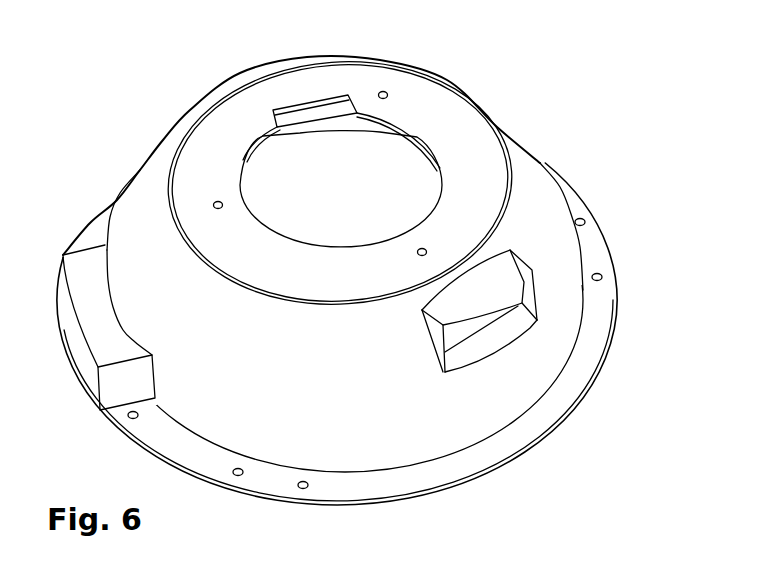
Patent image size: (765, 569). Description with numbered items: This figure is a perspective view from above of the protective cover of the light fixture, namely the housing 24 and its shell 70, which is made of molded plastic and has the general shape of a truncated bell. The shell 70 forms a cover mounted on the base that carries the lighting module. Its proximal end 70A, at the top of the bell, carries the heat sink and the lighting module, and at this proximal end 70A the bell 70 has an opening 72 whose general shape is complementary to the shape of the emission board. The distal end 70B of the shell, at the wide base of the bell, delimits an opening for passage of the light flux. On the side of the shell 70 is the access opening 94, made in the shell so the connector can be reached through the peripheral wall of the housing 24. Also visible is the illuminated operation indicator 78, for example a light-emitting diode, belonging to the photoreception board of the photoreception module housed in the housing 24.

The housing 24 is at (556, 114).
The shell 70 is at (531, 177).
The proximal end 70A is at (414, 102).
The distal end 70B is at (585, 358).
The opening 72 is at (310, 104).
The illuminated operation indicator 78 is at (88, 273).
The access opening 94 is at (537, 321).